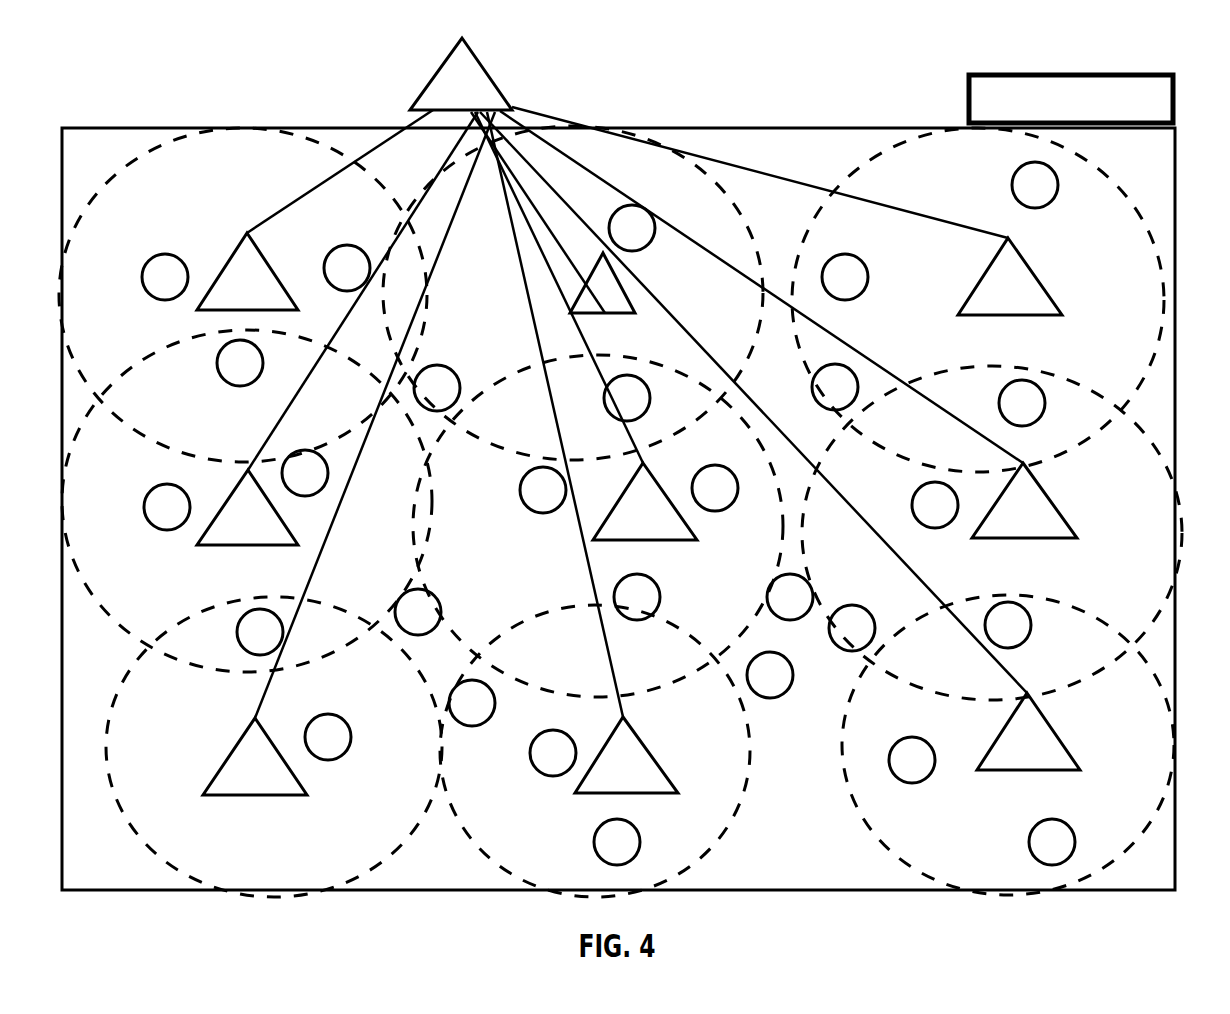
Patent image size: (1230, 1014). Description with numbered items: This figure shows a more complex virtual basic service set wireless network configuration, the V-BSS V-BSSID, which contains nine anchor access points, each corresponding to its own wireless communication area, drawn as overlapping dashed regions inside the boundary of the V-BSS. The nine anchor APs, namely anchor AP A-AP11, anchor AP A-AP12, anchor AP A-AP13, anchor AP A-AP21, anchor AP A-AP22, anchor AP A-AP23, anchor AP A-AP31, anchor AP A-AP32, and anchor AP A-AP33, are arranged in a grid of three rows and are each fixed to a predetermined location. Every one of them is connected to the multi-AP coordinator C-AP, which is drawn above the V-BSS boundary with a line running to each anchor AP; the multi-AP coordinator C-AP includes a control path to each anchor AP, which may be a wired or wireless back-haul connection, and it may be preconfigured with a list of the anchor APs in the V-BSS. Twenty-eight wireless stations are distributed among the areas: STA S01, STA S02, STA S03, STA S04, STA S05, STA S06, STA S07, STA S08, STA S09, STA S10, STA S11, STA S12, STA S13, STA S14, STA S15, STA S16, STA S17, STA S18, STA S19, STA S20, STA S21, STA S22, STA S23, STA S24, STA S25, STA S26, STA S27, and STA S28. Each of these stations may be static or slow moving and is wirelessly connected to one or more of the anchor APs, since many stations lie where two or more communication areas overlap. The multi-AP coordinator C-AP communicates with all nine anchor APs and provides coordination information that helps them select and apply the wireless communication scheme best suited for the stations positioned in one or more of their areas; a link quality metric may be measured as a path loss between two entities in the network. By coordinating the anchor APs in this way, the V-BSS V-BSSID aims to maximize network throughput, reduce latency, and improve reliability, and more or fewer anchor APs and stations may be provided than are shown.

The V-BSS V-BSSID is at (1071, 99).
The multi-AP coordinator C-AP is at (461, 74).
The anchor AP A-AP11 is at (315, 210).
The anchor AP A-AP12 is at (553, 212).
The anchor AP A-AP13 is at (787, 211).
The anchor AP A-AP21 is at (337, 328).
The anchor AP A-AP22 is at (586, 326).
The anchor AP A-AP23 is at (788, 324).
The anchor AP A-AP31 is at (349, 453).
The anchor AP A-AP32 is at (582, 452).
The anchor AP A-AP33 is at (780, 441).
The STA S01 is at (165, 277).
The STA S02 is at (347, 268).
The STA S03 is at (240, 363).
The STA S04 is at (632, 228).
The STA S05 is at (437, 388).
The STA S06 is at (627, 398).
The STA S07 is at (845, 277).
The STA S08 is at (1035, 185).
The STA S09 is at (835, 387).
The STA S10 is at (1022, 403).
The STA S11 is at (167, 507).
The STA S12 is at (305, 473).
The STA S13 is at (418, 612).
The STA S14 is at (543, 490).
The STA S15 is at (715, 488).
The STA S16 is at (637, 597).
The STA S17 is at (790, 597).
The STA S18 is at (935, 505).
The STA S19 is at (852, 628).
The STA S20 is at (1008, 625).
The STA S21 is at (260, 632).
The STA S22 is at (328, 737).
The STA S23 is at (472, 703).
The STA S24 is at (553, 753).
The STA S25 is at (617, 842).
The STA S26 is at (770, 675).
The STA S27 is at (912, 760).
The STA S28 is at (1052, 842).